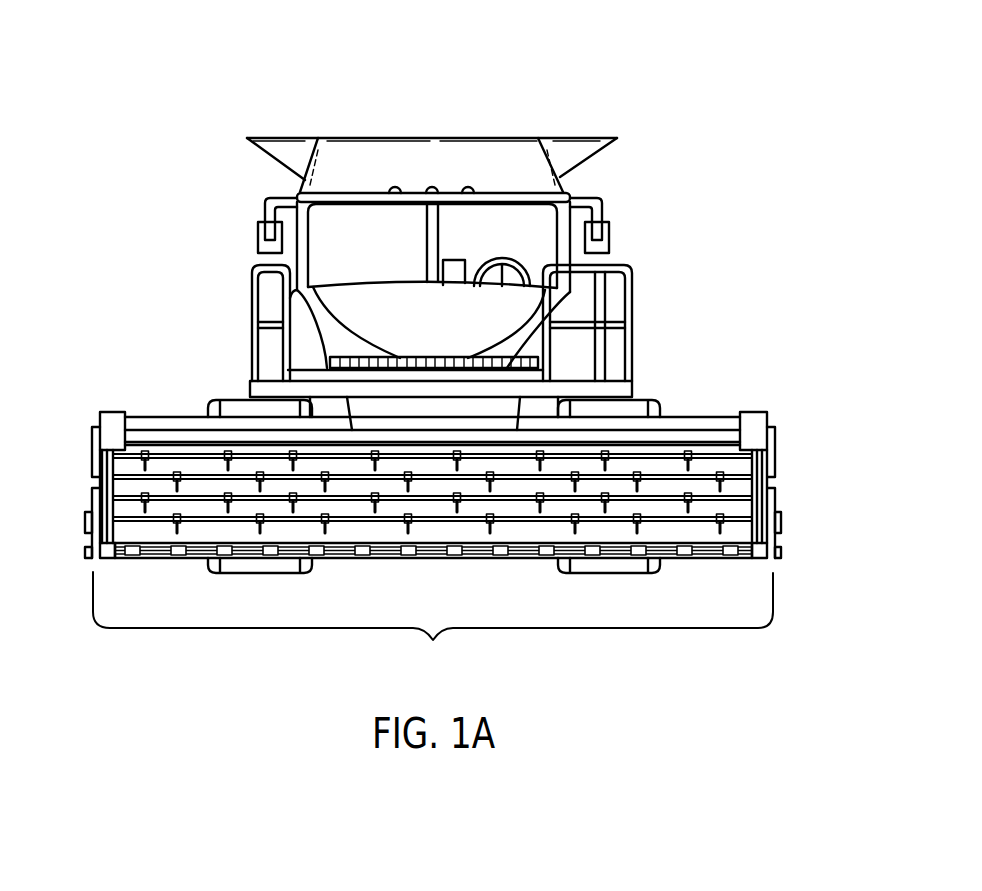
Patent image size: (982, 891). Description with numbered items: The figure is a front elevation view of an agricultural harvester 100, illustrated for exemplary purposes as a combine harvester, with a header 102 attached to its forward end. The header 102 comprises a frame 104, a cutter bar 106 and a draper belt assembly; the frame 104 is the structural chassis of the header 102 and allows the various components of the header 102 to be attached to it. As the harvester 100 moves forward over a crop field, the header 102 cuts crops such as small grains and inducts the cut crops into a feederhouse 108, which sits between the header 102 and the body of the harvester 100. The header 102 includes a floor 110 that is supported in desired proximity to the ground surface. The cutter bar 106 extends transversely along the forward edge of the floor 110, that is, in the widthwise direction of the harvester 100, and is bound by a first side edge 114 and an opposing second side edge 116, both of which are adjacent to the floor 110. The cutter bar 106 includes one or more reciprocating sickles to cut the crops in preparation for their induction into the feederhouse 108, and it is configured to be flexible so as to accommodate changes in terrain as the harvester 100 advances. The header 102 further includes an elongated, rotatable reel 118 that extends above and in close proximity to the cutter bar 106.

The agricultural harvester 100 is at (343, 137).
The header 102 is at (784, 368).
The frame 104 is at (675, 412).
The cutter bar 106 is at (433, 625).
The feederhouse 108 is at (490, 400).
The floor 110 is at (294, 558).
The first side edge 114 is at (775, 447).
The second side edge 116 is at (92, 445).
The reel 118 is at (155, 540).